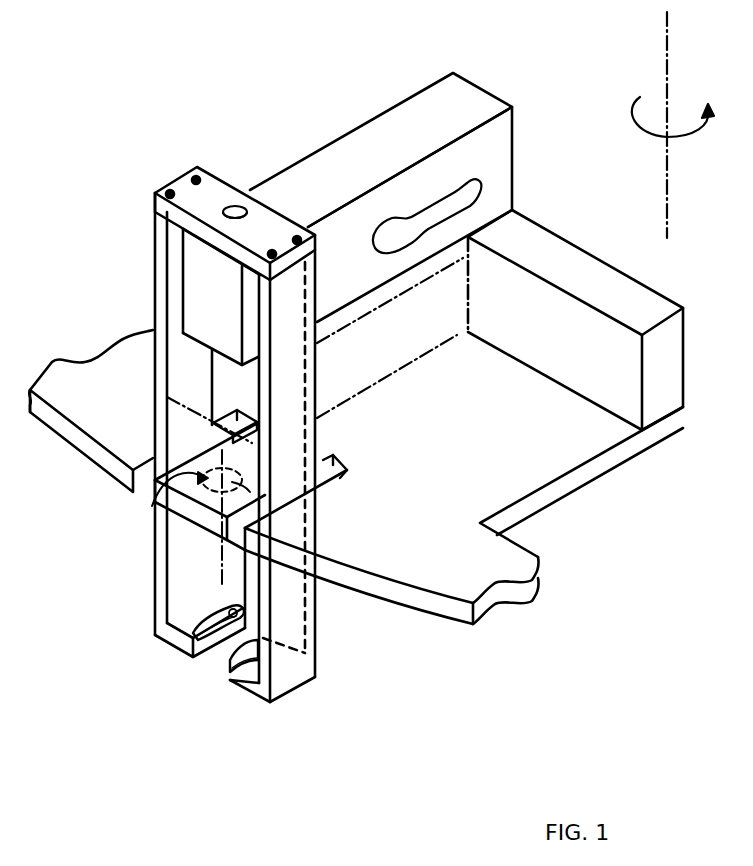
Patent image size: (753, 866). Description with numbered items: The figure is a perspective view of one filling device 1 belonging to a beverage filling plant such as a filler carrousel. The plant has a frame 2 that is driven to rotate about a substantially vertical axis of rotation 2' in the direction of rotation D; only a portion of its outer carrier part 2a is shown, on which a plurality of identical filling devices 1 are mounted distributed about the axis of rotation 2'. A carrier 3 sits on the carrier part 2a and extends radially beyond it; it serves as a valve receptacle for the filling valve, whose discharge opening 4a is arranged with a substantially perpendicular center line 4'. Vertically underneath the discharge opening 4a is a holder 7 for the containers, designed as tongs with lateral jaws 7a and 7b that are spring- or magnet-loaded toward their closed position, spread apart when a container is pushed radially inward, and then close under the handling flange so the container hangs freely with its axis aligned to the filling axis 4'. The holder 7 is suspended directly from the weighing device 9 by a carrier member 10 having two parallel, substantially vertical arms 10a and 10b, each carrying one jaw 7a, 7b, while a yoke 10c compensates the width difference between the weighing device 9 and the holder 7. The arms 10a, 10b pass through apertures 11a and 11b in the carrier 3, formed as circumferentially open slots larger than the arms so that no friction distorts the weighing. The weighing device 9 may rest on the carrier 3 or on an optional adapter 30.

The filling device 1 is at (92, 188).
The frame 2 is at (585, 309).
The axis of rotation 2' is at (687, 125).
The outer carrier part 2a is at (658, 300).
The carrier 3 is at (448, 479).
The center line 4' is at (237, 517).
The discharge opening 4a is at (185, 483).
The holder 7 is at (198, 673).
The lateral jaw 7a is at (185, 645).
The lateral jaw 7b is at (240, 676).
The weighing device 9 is at (357, 136).
The carrier member 10 is at (191, 442).
The arm 10a is at (155, 594).
The arm 10b is at (270, 668).
The yoke 10c is at (218, 190).
The aperture 11a is at (236, 414).
The aperture 11b is at (340, 465).
The adapter 30 is at (420, 345).
The direction of rotation D is at (673, 131).